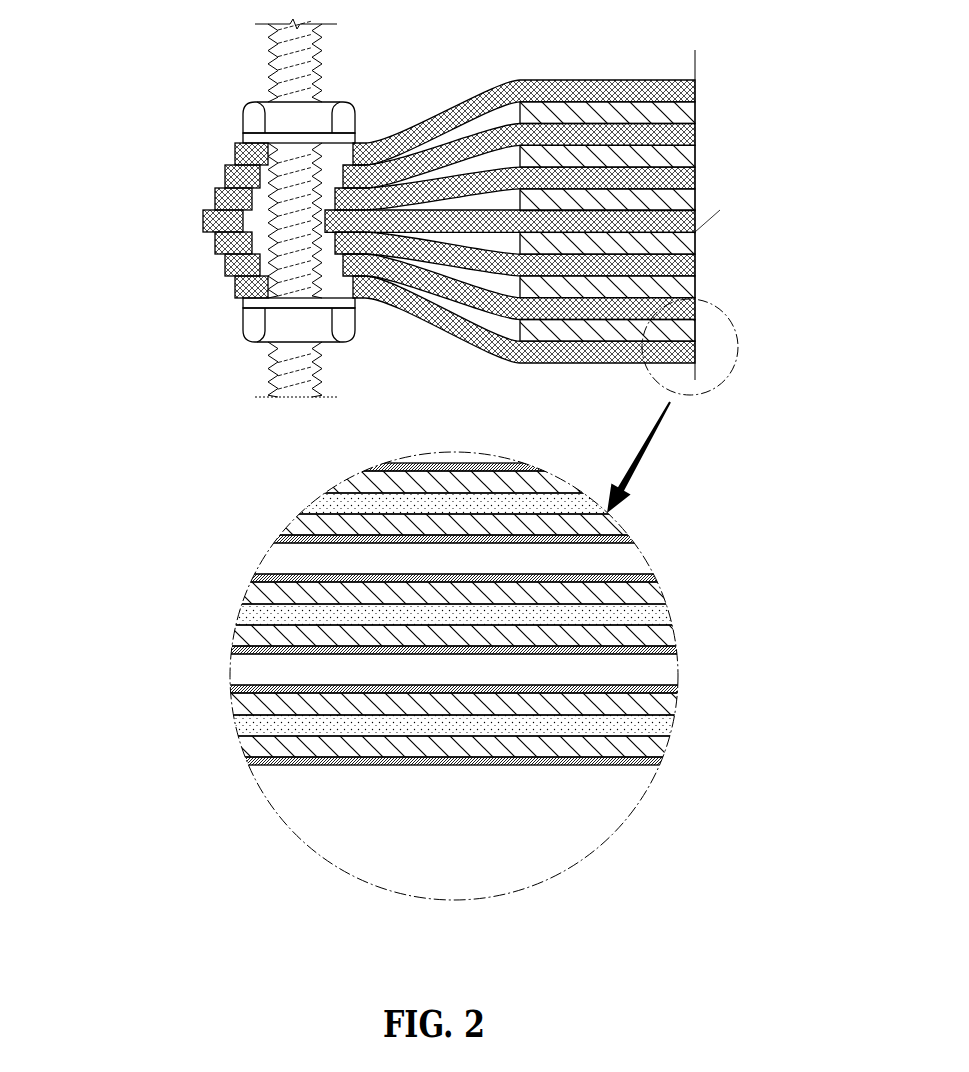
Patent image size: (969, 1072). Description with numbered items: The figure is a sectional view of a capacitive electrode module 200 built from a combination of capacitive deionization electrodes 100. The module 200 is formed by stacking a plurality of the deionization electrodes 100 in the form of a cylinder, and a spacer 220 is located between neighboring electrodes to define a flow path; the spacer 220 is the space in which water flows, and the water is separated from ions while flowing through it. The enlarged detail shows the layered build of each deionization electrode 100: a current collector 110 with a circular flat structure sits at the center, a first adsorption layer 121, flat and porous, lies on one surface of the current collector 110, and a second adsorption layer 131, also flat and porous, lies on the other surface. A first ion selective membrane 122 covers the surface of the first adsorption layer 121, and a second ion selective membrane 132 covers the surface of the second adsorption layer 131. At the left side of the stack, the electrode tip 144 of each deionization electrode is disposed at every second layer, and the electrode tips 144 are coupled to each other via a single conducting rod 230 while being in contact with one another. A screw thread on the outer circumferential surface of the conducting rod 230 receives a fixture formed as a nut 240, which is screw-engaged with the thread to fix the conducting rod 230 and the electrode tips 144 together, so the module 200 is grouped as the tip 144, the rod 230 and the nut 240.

The capacitive deionization electrode 100 is at (457, 103).
The current collector 110 is at (662, 618).
The first adsorption layer 121 is at (665, 642).
The first ion selective membrane 122 is at (530, 765).
The second adsorption layer 131 is at (660, 592).
The second ion selective membrane 132 is at (665, 688).
The electrode tip 144 is at (202, 222).
The capacitive electrode module 200 is at (130, 408).
The spacer 220 is at (623, 550).
The conducting rod 230 is at (282, 380).
The nut 240 is at (255, 120).